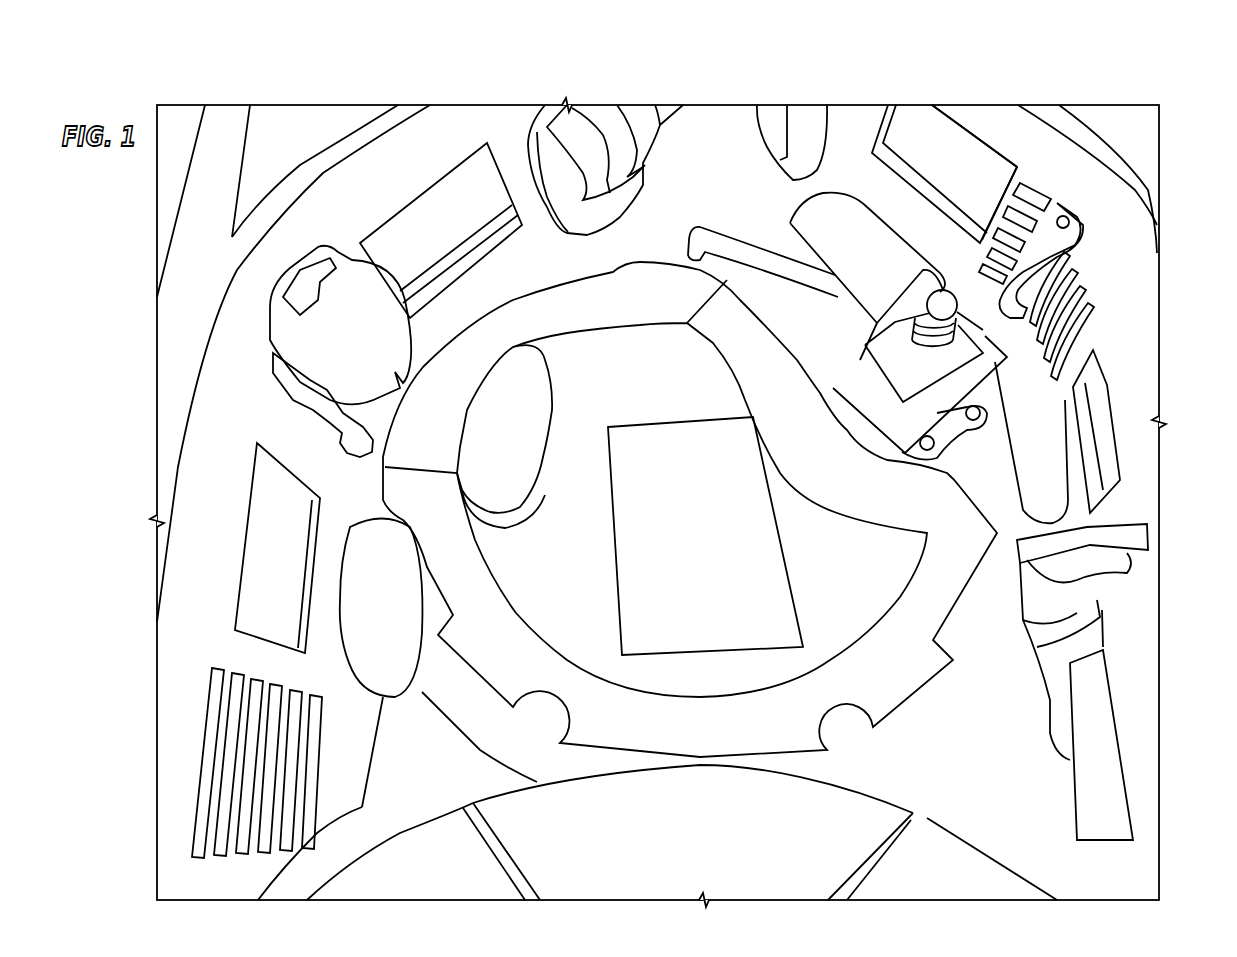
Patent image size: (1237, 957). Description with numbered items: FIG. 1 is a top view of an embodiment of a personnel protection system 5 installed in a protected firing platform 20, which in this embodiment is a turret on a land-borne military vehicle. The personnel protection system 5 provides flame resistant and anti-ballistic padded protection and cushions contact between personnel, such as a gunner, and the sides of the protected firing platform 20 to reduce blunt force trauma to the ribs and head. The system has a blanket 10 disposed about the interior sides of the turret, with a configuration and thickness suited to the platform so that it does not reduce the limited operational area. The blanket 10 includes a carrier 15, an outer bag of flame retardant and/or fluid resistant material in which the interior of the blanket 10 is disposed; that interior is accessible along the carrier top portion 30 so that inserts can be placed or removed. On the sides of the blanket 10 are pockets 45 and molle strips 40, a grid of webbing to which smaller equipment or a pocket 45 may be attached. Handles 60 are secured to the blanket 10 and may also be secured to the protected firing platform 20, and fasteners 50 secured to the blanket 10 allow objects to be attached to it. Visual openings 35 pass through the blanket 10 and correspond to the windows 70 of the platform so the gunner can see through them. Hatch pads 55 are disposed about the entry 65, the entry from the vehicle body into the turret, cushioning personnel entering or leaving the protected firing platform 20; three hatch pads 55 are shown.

The personnel protection system 5 is at (1099, 72).
The blanket 10 is at (467, 123).
The carrier 15 is at (427, 153).
The protected firing platform 20 is at (224, 148).
The carrier top portion 30 is at (1117, 175).
The visual openings 35 is at (456, 230).
The molle strips 40 is at (1035, 197).
The pockets 45 is at (400, 338).
The fasteners 50 is at (1135, 540).
The hatch pad 55 is at (893, 687).
The handles 60 is at (1063, 217).
The entry 65 is at (560, 583).
The windows 70 is at (935, 133).